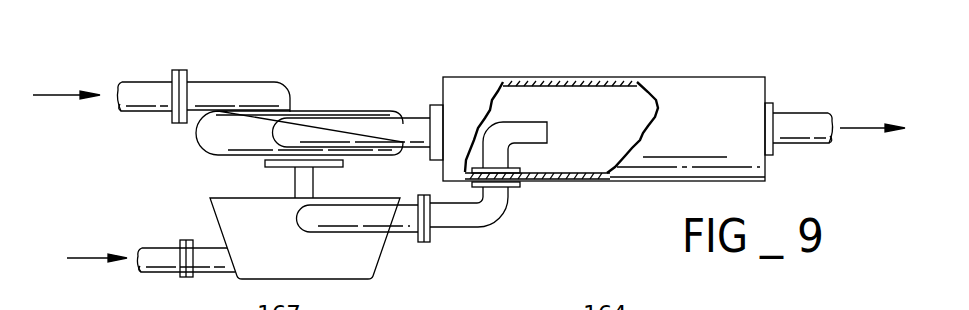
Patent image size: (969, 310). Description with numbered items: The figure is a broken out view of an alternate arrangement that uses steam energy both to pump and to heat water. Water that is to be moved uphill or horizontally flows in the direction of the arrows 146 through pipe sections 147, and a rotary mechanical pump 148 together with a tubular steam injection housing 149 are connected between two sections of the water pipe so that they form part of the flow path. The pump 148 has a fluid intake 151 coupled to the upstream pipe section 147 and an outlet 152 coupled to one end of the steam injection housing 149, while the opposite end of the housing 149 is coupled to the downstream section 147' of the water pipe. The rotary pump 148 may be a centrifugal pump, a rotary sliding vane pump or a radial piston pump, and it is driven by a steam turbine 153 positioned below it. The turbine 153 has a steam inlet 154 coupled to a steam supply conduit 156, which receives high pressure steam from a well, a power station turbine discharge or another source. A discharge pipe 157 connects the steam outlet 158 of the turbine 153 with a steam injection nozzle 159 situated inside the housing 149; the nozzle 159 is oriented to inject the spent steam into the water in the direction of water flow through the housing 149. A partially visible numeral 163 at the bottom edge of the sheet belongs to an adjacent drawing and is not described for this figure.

The arrows 146 is at (53, 95).
The pipe section 147 is at (152, 78).
The downstream section of the water pipe 147' is at (818, 94).
The fluid intake 151 is at (219, 81).
The rotary mechanical pump 148 is at (328, 98).
The outlet 152 is at (388, 127).
The tubular steam injection housing 149 is at (703, 70).
The steam injection nozzle 159 is at (540, 113).
The steam outlet 158 is at (410, 203).
The discharge pipe 157 is at (498, 218).
The steam turbine 153 is at (388, 261).
The steam supply conduit 156 is at (152, 247).
The steam inlet 154 is at (212, 273).
The element (partial, adjacent figure) 163 is at (697, 302).